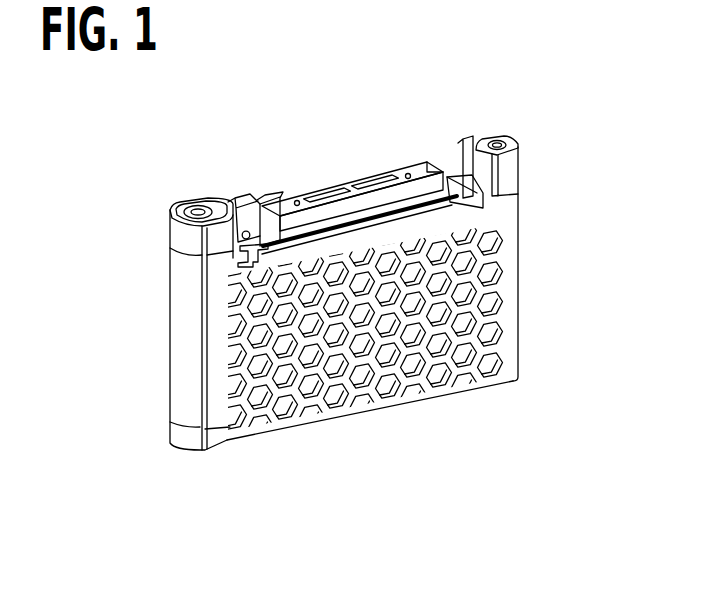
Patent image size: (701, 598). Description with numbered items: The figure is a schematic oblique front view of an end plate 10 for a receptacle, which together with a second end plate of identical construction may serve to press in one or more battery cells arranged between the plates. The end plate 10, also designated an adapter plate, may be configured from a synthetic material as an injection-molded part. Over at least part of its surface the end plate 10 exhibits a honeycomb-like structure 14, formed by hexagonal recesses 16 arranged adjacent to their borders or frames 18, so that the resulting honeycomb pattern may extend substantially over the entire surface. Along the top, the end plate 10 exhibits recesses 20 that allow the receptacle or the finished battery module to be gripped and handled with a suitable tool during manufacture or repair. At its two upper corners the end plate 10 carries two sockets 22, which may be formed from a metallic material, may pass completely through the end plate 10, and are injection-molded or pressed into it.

The end plate 10 is at (575, 168).
The honeycomb-like structure 14 is at (505, 310).
The hexagonal recesses 16 is at (440, 378).
The borders or frames 18 is at (497, 362).
The recesses 20 is at (323, 184).
The sockets 22 is at (199, 206).